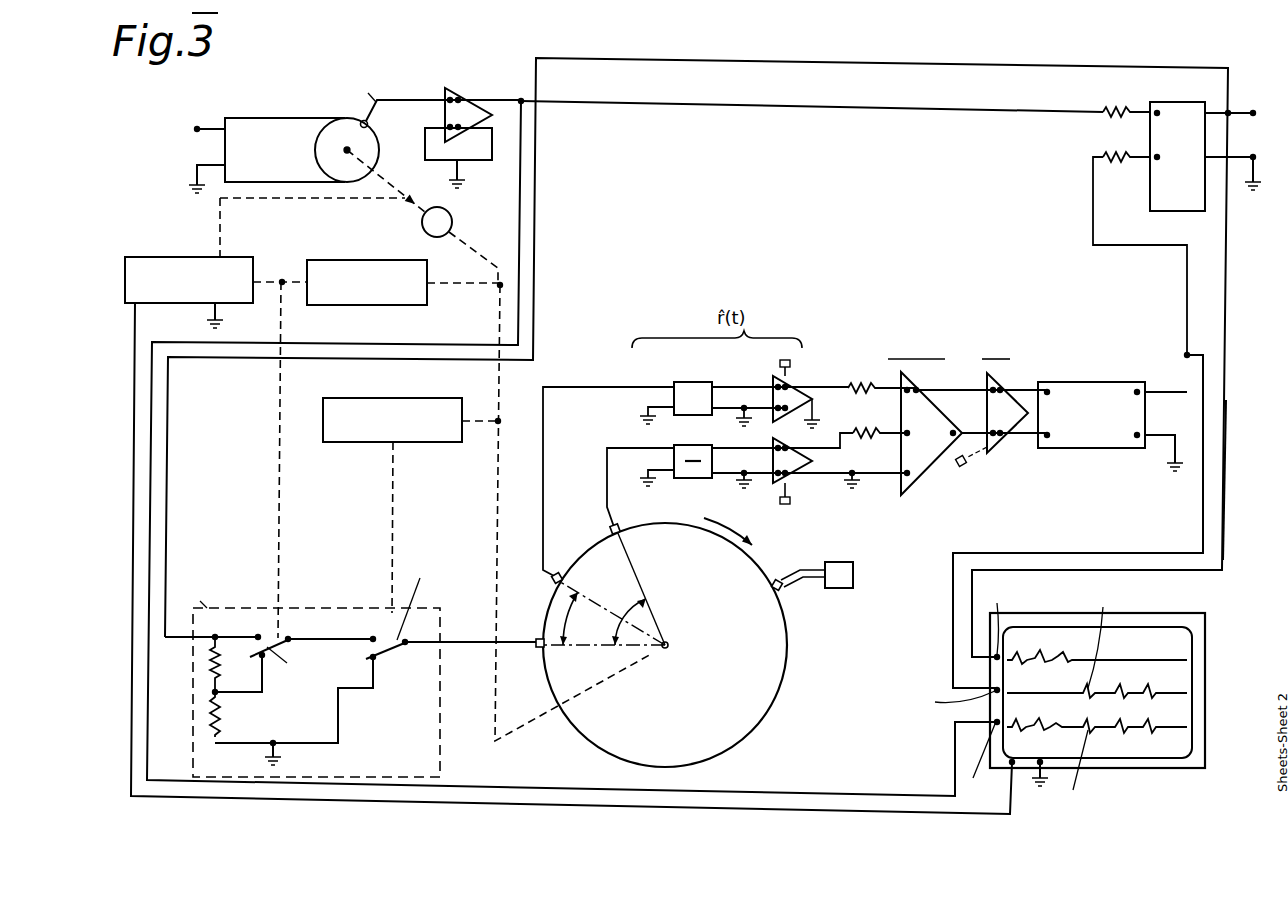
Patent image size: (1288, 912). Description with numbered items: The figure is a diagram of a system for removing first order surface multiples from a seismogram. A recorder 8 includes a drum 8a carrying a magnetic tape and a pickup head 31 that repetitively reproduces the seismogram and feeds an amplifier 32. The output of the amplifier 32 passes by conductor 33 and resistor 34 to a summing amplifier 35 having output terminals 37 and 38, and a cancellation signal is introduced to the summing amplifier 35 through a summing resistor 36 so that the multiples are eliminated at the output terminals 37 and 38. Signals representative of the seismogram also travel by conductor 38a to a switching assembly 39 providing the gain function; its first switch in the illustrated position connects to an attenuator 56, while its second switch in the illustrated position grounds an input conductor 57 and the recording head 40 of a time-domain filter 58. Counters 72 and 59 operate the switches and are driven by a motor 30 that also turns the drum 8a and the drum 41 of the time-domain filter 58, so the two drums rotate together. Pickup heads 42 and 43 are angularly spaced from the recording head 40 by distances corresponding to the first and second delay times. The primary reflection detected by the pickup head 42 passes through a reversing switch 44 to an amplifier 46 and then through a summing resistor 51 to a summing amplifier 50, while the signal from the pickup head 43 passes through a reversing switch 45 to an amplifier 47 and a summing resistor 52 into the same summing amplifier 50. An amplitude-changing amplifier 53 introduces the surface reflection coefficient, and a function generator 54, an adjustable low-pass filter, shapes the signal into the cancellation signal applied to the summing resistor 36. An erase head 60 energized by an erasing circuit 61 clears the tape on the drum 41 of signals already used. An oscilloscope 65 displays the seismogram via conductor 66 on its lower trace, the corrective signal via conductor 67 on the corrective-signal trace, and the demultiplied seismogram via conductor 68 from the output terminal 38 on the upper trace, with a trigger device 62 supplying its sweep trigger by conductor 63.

The recorder 8 is at (262, 126).
The drum 8a is at (335, 127).
The motor 30 is at (422, 226).
The pickup head 31 is at (368, 126).
The amplifier 32 is at (453, 97).
The conductor 33 is at (845, 110).
The resistor 34 is at (1107, 112).
The summing amplifier 35 is at (1192, 205).
The summing resistor 36 is at (1122, 159).
The output terminal 37 is at (1265, 150).
The output terminal 38 is at (1256, 112).
The conductor 38a is at (533, 247).
The switching assembly 39 is at (290, 668).
The recording head 40 is at (539, 648).
The drum 41 is at (588, 744).
The pickup head 42 is at (559, 573).
The pickup head 43 is at (610, 526).
The reversing switch 44 is at (683, 382).
The reversing switch 45 is at (690, 470).
The amplifier 46 is at (773, 380).
The amplifier 47 is at (793, 462).
The summing amplifier 50 is at (930, 470).
The summing resistor 51 is at (868, 376).
The summing resistor 52 is at (879, 422).
The amplitude-changing amplifier 53 is at (1004, 445).
The function generator 54 is at (1110, 443).
The attenuator 56 is at (215, 692).
The input conductor 57 is at (515, 642).
The time-domain filter 58 is at (675, 644).
The counter 59 is at (433, 433).
The erase head 60 is at (781, 578).
The erasing circuit 61 is at (853, 571).
The trigger device 62 is at (162, 260).
The conductor 63 is at (908, 814).
The oscilloscope 65 is at (1135, 768).
The conductor 66 is at (521, 187).
The conductor 67 is at (1057, 552).
The conductor 68 is at (1224, 497).
The counter 72 is at (392, 305).